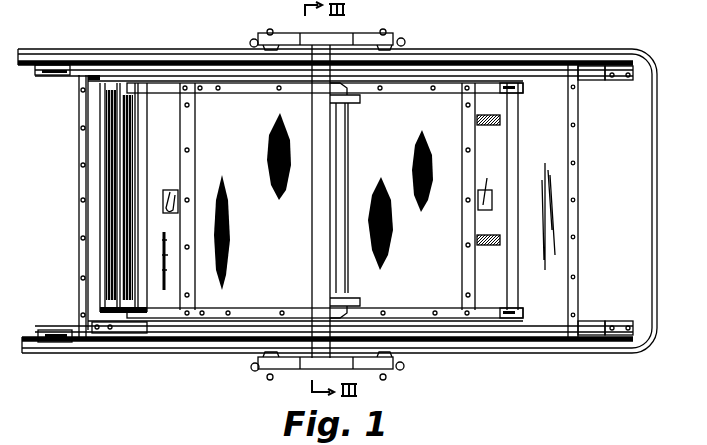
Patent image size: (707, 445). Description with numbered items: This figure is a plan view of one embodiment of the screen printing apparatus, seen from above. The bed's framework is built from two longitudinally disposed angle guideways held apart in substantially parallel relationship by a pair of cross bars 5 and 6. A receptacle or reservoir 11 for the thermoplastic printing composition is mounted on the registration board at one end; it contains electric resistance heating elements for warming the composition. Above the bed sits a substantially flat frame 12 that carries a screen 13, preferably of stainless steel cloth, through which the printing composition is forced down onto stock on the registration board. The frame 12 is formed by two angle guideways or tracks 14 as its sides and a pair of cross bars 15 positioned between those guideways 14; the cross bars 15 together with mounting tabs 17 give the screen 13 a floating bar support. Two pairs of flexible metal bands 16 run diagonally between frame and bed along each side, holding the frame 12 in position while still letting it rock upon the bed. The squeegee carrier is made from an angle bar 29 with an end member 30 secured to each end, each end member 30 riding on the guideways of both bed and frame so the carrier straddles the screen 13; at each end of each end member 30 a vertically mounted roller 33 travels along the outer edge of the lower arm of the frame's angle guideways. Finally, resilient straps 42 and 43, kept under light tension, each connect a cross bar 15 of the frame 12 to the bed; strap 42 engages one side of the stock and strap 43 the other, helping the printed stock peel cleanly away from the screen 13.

The cross bar 5 is at (579, 153).
The cross bar 6 is at (80, 160).
The receptacle or reservoir 11 is at (100, 293).
The flat frame 12 is at (548, 49).
The screen 13 is at (418, 100).
The guideways or tracks 14 is at (605, 49).
The cross bars 15 is at (143, 128).
The bands 16 is at (67, 78).
The mounting tabs 17 is at (165, 310).
The angle bar 29 is at (312, 224).
The end member 30 is at (352, 33).
The roller 33 is at (254, 40).
The strap 42 is at (500, 124).
The strap 43 is at (476, 238).